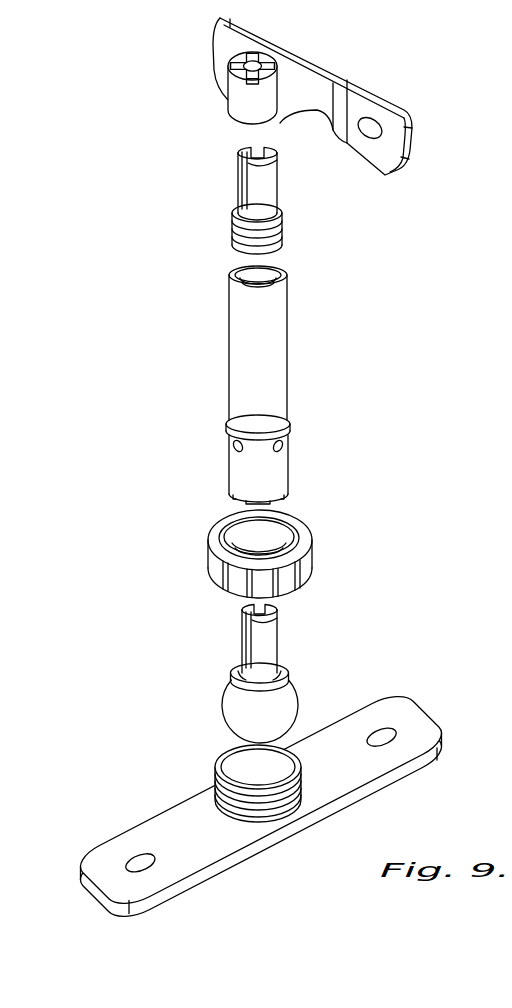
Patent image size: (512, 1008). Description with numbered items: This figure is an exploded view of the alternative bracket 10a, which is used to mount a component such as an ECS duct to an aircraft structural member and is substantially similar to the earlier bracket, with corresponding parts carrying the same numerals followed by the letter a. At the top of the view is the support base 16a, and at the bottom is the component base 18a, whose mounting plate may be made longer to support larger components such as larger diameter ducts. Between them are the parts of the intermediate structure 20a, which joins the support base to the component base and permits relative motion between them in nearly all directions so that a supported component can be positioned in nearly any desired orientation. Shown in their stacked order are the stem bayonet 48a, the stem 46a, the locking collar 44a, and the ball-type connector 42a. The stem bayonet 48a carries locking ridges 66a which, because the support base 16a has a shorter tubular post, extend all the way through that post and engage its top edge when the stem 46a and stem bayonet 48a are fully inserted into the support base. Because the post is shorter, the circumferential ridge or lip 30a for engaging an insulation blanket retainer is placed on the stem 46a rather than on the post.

The bracket 10a is at (170, 140).
The support base 16a is at (380, 76).
The component base 18a is at (140, 808).
The intermediate structure 20a is at (12, 225).
The circumferential ridge or lip 30a is at (288, 422).
The ball-type connector 42a is at (308, 666).
The locking collar 44a is at (330, 532).
The stem 46a is at (302, 329).
The stem bayonet 48a is at (260, 202).
The locking ridges 66a is at (240, 163).